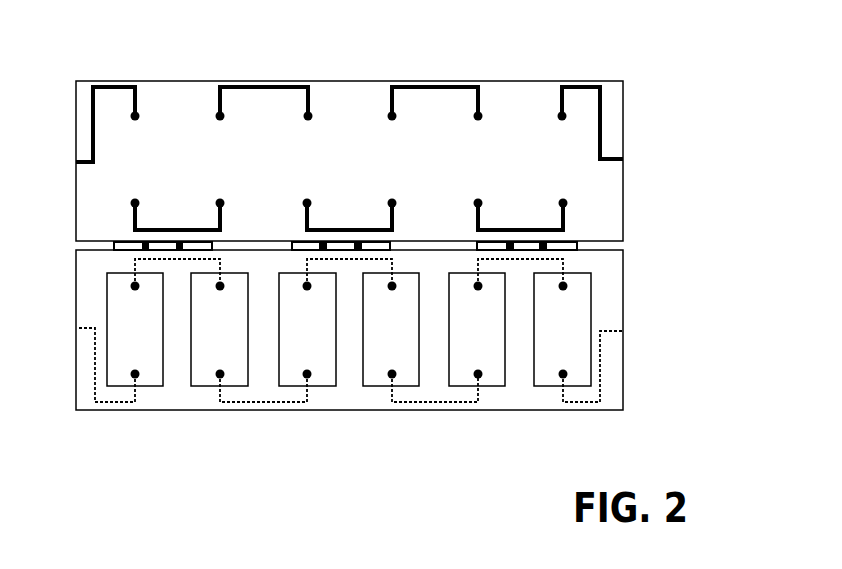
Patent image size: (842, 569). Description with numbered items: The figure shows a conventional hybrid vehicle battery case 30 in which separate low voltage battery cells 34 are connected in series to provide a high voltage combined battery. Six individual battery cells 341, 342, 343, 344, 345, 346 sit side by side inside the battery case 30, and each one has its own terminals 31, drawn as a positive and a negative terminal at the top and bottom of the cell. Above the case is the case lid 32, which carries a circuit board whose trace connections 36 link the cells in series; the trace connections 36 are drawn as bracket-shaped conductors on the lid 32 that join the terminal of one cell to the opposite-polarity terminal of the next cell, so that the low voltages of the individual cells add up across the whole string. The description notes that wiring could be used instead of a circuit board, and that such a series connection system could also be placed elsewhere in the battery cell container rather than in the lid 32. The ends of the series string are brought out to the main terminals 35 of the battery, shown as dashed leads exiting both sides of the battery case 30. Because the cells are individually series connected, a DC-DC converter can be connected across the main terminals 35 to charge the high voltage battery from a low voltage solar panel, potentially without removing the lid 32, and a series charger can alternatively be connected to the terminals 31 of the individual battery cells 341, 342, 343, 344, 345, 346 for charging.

The battery case 30 is at (623, 275).
The terminals 31 is at (475, 285).
The case lid 32 is at (623, 133).
The battery cells 34 is at (349, 363).
The battery cell 341 is at (150, 378).
The battery cell 342 is at (208, 375).
The battery cell 343 is at (323, 378).
The battery cell 344 is at (370, 375).
The battery cell 345 is at (490, 380).
The battery cell 346 is at (540, 377).
The main terminals 35 is at (76, 328).
The trace connections 36 is at (188, 230).